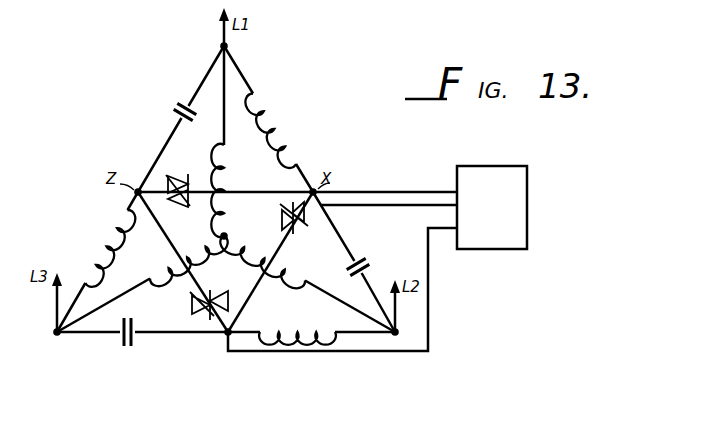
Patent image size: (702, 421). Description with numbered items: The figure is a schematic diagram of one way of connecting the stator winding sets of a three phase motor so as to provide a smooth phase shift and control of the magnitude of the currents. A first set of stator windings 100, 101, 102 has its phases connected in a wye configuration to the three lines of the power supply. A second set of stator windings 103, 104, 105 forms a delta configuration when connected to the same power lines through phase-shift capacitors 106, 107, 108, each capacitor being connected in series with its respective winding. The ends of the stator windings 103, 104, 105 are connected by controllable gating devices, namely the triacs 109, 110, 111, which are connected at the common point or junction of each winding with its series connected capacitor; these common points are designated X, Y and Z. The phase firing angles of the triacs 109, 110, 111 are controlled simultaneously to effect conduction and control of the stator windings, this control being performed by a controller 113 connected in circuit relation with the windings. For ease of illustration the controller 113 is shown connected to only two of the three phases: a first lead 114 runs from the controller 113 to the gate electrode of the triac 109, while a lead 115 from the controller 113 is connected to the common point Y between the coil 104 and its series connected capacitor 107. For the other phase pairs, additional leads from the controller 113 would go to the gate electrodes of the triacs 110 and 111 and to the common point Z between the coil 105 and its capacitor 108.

The stator winding 100 is at (233, 186).
The stator winding 101 is at (298, 264).
The stator winding 102 is at (191, 258).
The stator winding 103 is at (274, 106).
The stator winding 104 is at (306, 316).
The stator winding 105 is at (112, 226).
The phase-shift capacitor 106 is at (368, 264).
The phase-shift capacitor 107 is at (130, 346).
The phase-shift capacitor 108 is at (176, 108).
The triac 109 is at (282, 218).
The triac 110 is at (192, 302).
The triac 111 is at (170, 175).
The controller 113 is at (504, 221).
The first lead 114 is at (378, 207).
The lead 115 is at (427, 236).